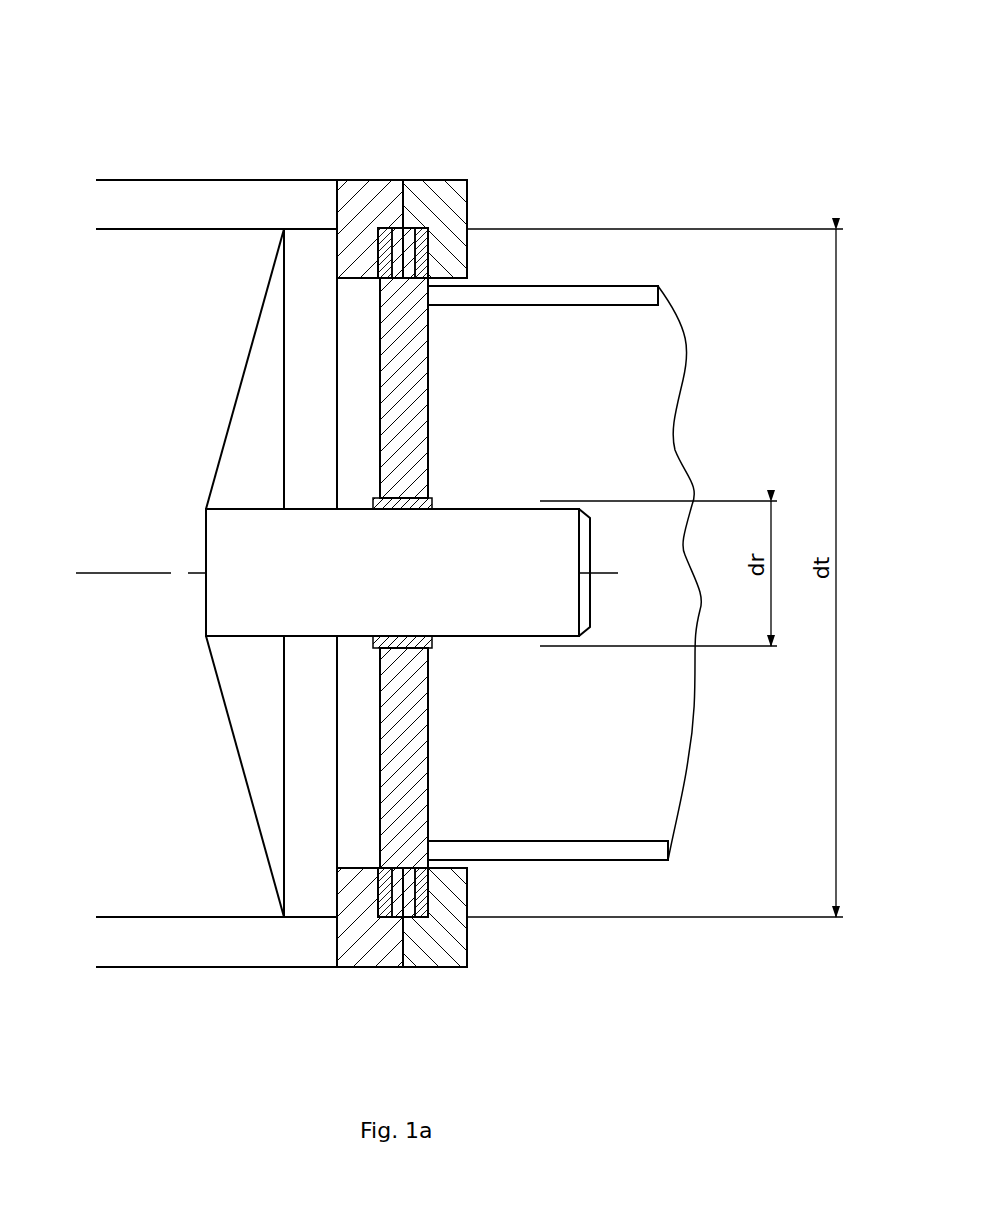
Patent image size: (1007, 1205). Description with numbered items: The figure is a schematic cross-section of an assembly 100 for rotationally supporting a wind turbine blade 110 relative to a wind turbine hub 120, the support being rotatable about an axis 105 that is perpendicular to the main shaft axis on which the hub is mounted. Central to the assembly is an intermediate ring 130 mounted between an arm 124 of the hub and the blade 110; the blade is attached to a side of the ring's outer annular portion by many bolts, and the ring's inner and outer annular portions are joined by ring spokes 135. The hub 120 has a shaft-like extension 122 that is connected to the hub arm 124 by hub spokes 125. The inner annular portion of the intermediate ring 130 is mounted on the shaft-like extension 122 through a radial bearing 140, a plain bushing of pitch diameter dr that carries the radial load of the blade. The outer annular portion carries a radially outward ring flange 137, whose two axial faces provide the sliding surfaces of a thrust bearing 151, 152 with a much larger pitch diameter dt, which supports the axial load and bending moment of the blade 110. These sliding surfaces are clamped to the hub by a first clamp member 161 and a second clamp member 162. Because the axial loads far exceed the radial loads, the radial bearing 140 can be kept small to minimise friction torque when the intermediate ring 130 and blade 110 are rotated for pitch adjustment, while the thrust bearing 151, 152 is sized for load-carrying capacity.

The assembly 100 is at (612, 100).
The axis 105 is at (138, 573).
The wind turbine blade 110 is at (557, 849).
The wind turbine hub 120 is at (170, 888).
The shaft-like extension 122 is at (483, 537).
The hub arm 124 is at (224, 943).
The hub spokes 125 is at (305, 790).
The intermediate ring 130 is at (446, 794).
The ring spokes 135 is at (420, 395).
The ring flange 137 is at (406, 250).
The radial bearing 140 is at (430, 650).
The thrust bearing 151 is at (385, 897).
The thrust bearing 152 is at (420, 897).
The first clamp member 161 is at (369, 210).
The second clamp member 162 is at (440, 210).